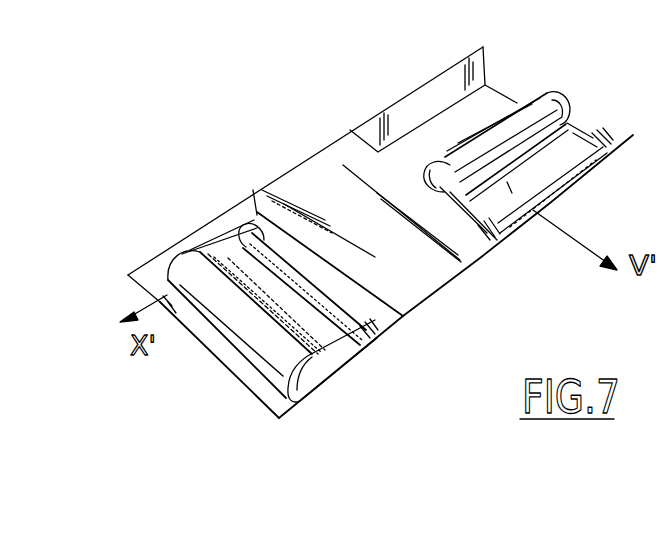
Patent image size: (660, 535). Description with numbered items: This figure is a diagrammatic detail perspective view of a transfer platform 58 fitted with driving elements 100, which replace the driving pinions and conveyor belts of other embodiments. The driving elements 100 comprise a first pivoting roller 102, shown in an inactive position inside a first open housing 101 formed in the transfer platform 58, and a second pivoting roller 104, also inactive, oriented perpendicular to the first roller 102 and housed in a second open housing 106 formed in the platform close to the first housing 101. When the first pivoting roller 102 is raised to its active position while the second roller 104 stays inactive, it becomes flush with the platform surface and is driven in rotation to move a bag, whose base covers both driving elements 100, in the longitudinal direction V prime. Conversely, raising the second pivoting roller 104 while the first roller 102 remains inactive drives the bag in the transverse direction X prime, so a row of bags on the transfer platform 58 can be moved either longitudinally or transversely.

The transfer platform 58 is at (619, 211).
The driving elements 100 is at (302, 136).
The first open housing 101 is at (440, 102).
The first pivoting roller 102 is at (528, 118).
The second pivoting roller 104 is at (190, 260).
The second open housing 106 is at (150, 283).